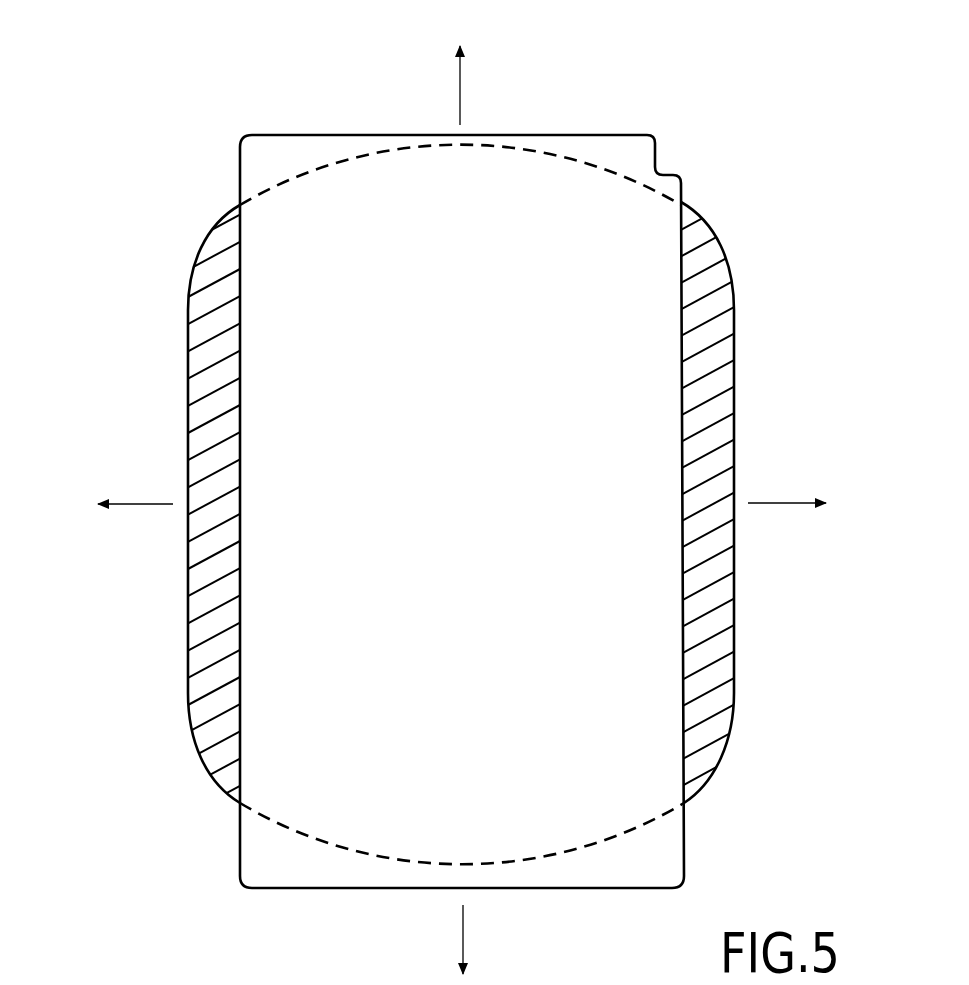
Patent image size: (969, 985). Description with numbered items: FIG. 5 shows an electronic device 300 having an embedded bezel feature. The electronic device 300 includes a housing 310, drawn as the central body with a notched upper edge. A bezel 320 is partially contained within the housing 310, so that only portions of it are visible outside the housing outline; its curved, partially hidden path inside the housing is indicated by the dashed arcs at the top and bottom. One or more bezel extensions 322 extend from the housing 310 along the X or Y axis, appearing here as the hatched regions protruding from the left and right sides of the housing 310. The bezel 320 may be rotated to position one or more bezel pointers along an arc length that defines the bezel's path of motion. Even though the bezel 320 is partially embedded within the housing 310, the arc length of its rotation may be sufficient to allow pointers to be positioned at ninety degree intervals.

The electronic device 300 is at (755, 57).
The housing 310 is at (228, 160).
The bezel 320 is at (177, 340).
The bezel extensions 322 is at (207, 270).